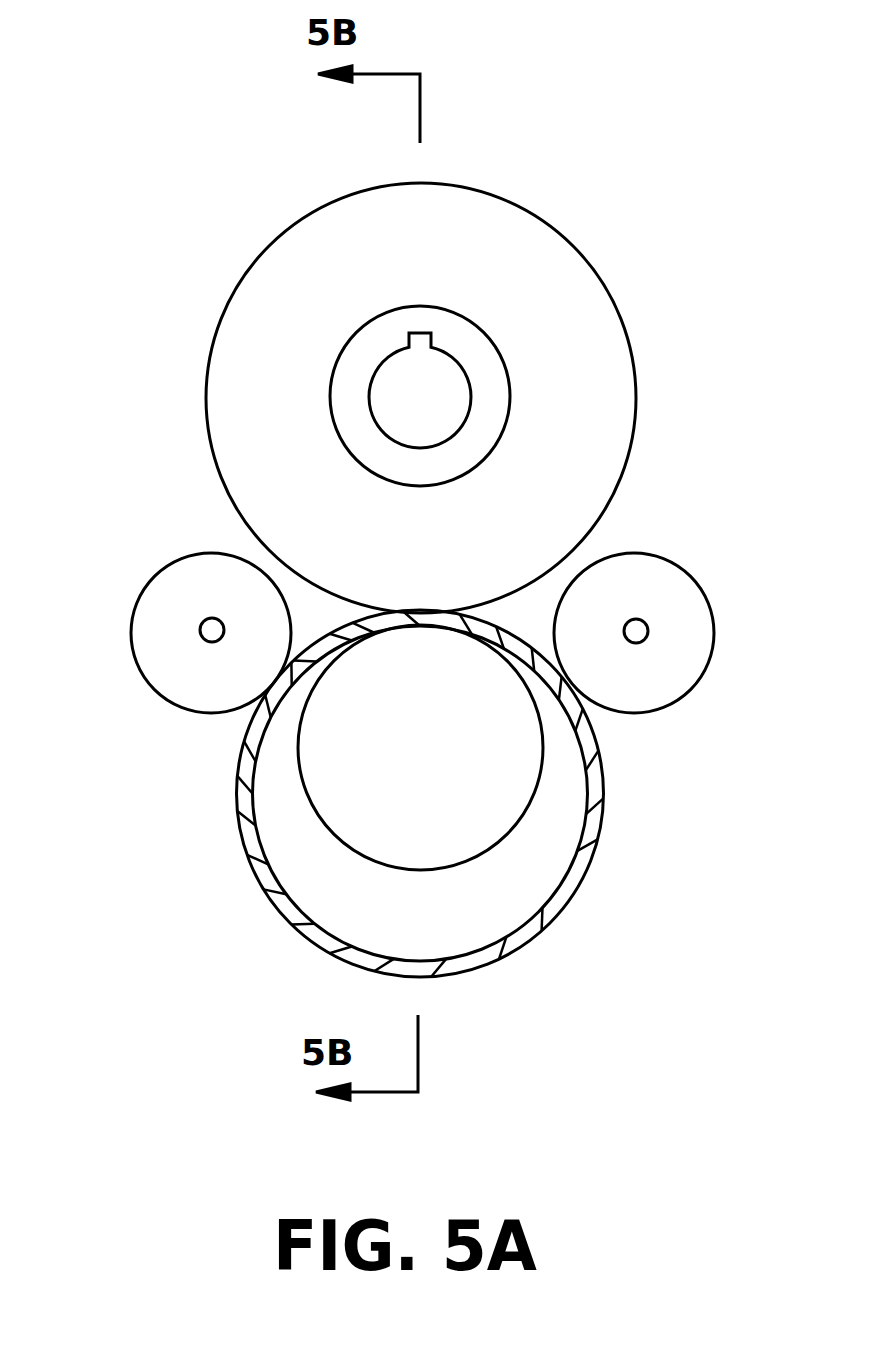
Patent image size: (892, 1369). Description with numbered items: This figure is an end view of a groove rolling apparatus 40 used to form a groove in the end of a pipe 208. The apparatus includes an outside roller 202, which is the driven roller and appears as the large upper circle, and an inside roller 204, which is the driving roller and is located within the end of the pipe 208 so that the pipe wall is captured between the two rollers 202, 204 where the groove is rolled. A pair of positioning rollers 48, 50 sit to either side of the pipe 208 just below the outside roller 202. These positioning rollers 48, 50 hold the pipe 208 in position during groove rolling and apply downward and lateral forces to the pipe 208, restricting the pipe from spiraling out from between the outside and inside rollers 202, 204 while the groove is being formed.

The groove rolling apparatus 40 is at (246, 206).
The outside roller 202 is at (540, 218).
The inside roller 204 is at (540, 777).
The pipe 208 is at (495, 957).
The positioning roller 48 is at (662, 573).
The positioning roller 50 is at (165, 593).